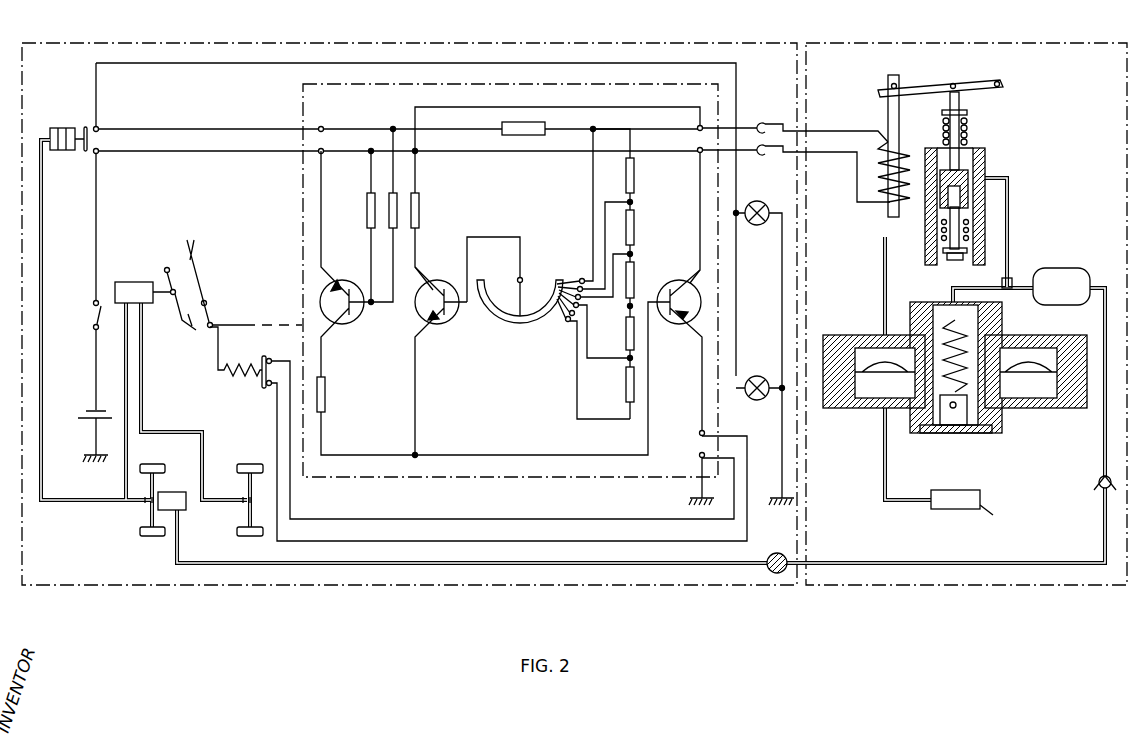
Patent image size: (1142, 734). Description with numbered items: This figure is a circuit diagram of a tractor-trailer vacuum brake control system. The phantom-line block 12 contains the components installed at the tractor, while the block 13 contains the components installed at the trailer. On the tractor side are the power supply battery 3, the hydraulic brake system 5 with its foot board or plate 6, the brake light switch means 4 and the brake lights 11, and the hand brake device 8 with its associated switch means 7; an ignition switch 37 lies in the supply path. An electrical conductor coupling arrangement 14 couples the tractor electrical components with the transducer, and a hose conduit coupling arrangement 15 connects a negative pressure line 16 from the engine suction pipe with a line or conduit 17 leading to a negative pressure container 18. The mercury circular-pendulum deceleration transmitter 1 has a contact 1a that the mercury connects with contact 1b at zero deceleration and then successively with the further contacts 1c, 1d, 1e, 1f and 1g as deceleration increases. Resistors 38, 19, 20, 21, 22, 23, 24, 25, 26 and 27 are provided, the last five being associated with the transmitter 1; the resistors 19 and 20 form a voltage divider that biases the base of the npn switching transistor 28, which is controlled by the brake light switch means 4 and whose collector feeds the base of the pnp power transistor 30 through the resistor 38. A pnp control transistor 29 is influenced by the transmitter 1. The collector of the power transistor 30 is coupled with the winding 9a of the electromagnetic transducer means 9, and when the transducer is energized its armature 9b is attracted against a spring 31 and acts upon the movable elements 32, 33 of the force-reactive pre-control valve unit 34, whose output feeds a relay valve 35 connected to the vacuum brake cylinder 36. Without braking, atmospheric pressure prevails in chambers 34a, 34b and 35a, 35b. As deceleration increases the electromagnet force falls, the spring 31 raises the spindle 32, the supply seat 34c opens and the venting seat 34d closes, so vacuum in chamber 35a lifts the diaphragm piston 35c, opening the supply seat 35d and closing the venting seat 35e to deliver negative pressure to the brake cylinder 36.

The deceleration transmitter 1 is at (505, 320).
The contact 1a is at (518, 278).
The contact 1b is at (581, 278).
The contact 1c is at (578, 287).
The contact 1d is at (581, 300).
The contact 1e is at (577, 310).
The contact 1f is at (572, 318).
The contact 1g is at (566, 322).
The power supply battery 3 is at (90, 411).
The brake light switch means 4 is at (73, 127).
The hydraulic brake system 5 is at (137, 353).
The foot board or plate 6 is at (172, 288).
The switch means 7 is at (262, 386).
The hand brake device 8 is at (202, 270).
The electromagnetic transducer means 9 is at (885, 118).
The winding 9a is at (904, 143).
The armature 9b is at (876, 192).
The brake lights 11 is at (757, 200).
The block 12 is at (338, 43).
The block 13 is at (922, 43).
The electrical conductor coupling arrangement 14 is at (772, 124).
The hose conduit coupling arrangement 15 is at (777, 574).
The negative pressure line 16 is at (690, 565).
The line or conduit 17 is at (933, 565).
The negative pressure container 18 is at (1072, 268).
The resistor 19 is at (368, 195).
The resistor 20 is at (390, 216).
The resistor 21 is at (418, 200).
The resistor 22 is at (520, 135).
The resistor 23 is at (634, 172).
The resistor 24 is at (634, 225).
The resistor 25 is at (634, 274).
The resistor 26 is at (634, 343).
The resistor 27 is at (634, 388).
The switching transistor 28 is at (345, 322).
The control transistor 29 is at (440, 322).
The power transistor 30 is at (698, 297).
The spring 31 is at (968, 124).
The pre-control valve spindle 32 is at (975, 196).
The movable element 33 is at (980, 226).
The pre-control valve unit 34 is at (988, 205).
The chamber 34a is at (985, 238).
The chamber 34b is at (982, 160).
The supply seat 34c is at (925, 213).
The venting or aeration seat 34d is at (925, 258).
The relay valve 35 is at (955, 375).
The chamber 35a is at (866, 352).
The chamber 35b is at (870, 388).
The diaphragm piston 35c is at (930, 352).
The supply seat 35d is at (942, 430).
The venting seat 35e is at (985, 425).
The vacuum brake cylinder 36 is at (960, 499).
The ignition switch 37 is at (93, 310).
The resistor 38 is at (326, 395).